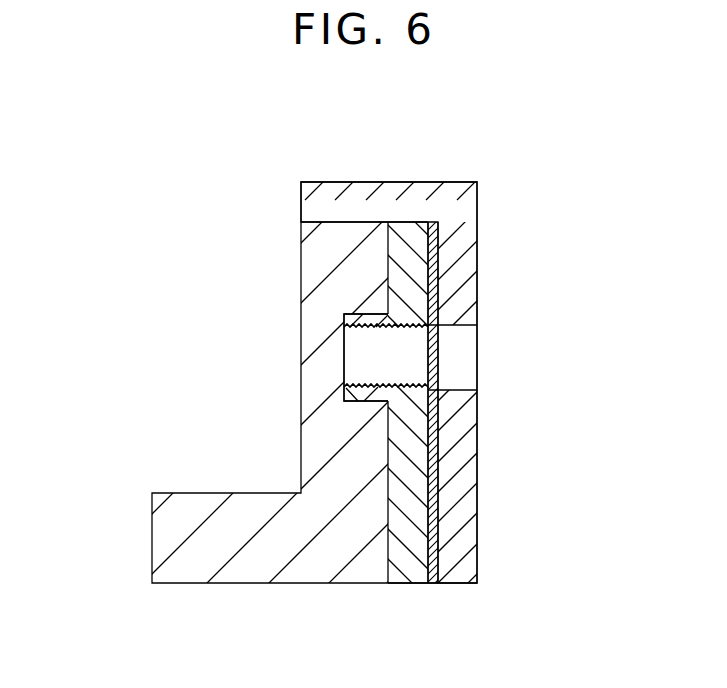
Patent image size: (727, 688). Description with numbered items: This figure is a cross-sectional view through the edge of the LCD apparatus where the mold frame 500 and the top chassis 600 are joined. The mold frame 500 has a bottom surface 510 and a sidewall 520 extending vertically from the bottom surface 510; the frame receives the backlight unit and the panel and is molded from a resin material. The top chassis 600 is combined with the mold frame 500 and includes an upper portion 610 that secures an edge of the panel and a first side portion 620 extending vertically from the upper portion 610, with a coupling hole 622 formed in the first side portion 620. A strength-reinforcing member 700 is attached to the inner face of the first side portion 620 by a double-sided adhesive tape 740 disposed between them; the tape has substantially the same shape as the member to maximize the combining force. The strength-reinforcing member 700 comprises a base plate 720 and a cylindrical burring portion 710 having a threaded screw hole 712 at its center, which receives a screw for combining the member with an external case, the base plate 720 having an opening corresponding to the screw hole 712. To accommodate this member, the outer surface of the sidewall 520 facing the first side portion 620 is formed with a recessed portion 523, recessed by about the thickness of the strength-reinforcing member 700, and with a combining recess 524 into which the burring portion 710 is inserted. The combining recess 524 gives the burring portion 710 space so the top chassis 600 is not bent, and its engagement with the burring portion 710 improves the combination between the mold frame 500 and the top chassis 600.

The mold frame 500 is at (143, 488).
The bottom surface 510 is at (300, 572).
The sidewall 520 is at (317, 252).
The recessed portion 523 is at (392, 248).
The combining recess 524 is at (362, 313).
The top chassis 600 is at (494, 175).
The upper portion 610 is at (350, 198).
The first side portion 620 is at (465, 265).
The coupling hole 622 is at (465, 366).
The strength-reinforcing member 700 is at (421, 600).
The burring portion 710 is at (368, 400).
The screw hole 712 is at (363, 386).
The base plate 720 is at (412, 430).
The double-sided adhesive tape 740 is at (438, 295).